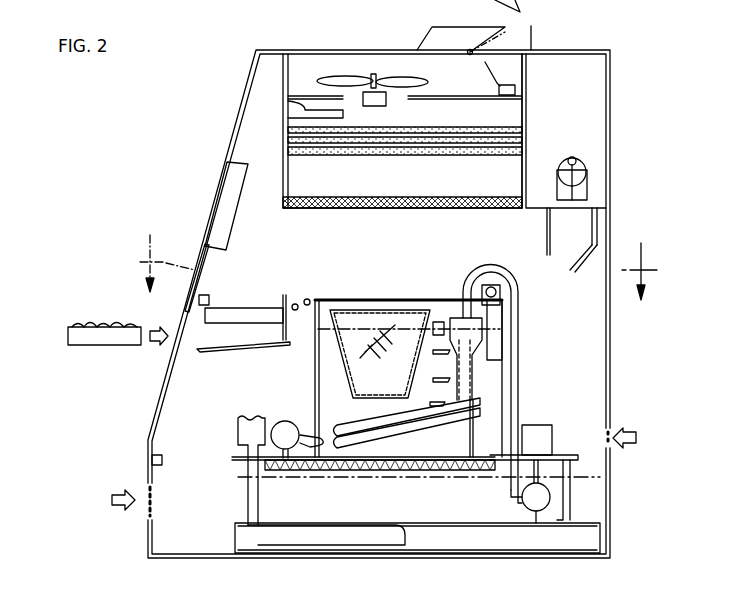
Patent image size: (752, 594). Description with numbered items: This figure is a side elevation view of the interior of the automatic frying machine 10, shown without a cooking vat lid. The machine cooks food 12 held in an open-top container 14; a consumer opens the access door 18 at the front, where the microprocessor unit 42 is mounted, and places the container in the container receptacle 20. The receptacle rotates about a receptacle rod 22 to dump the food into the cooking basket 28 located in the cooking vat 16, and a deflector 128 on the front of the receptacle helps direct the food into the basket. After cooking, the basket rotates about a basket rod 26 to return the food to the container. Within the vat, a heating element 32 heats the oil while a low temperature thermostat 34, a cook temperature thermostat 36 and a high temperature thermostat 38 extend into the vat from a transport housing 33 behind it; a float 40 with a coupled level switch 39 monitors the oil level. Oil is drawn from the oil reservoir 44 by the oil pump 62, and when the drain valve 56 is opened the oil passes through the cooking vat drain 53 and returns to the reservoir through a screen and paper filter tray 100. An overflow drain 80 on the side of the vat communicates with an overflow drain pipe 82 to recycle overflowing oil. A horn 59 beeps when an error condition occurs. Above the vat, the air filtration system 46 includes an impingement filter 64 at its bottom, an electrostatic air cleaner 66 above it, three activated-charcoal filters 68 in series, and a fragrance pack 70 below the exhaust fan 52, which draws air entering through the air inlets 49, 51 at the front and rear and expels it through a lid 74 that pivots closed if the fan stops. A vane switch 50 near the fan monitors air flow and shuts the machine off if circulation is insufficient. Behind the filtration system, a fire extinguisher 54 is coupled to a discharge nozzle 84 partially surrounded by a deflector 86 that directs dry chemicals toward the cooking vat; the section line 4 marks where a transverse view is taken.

The automatic frying machine 10 is at (162, 202).
The food 12 is at (95, 318).
The open-top container 14 is at (105, 340).
The section line 4 is at (390, 267).
The cooking vat 16 is at (379, 304).
The access door 18 is at (180, 352).
The container receptacle 20 is at (245, 350).
The receptacle rod 22 is at (310, 299).
The basket rod 26 is at (296, 304).
The cooking basket 28 is at (338, 360).
The heating element 32 is at (362, 425).
The transport housing 33 is at (503, 336).
The low temperature thermostat 34 is at (445, 355).
The cook temperature thermostat 36 is at (445, 382).
The high temperature thermostat 38 is at (442, 405).
The level switch 39 is at (500, 295).
The float 40 is at (437, 322).
The microprocessor unit 42 is at (228, 215).
The oil reservoir 44 is at (470, 512).
The air filtration system 46 is at (340, 222).
The air inlet 49 is at (150, 505).
The vane switch 50 is at (498, 70).
The air inlet 51 is at (609, 432).
The exhaust fan 52 is at (345, 76).
The cooking vat drain 53 is at (320, 445).
The fire extinguisher 54 is at (588, 182).
The drain valve 56 is at (288, 422).
The horn 59 is at (158, 455).
The oil pump 62 is at (550, 500).
The impingement filter 64 is at (404, 200).
The electrostatic air cleaner 66 is at (463, 178).
The activated-charcoal filters 68 is at (520, 148).
The fragrance pack 70 is at (292, 101).
The lid 74 is at (480, 25).
The overflow drain 80 is at (466, 282).
The overflow drain pipe 82 is at (470, 440).
The discharge nozzle 84 is at (585, 195).
The deflector 86 is at (592, 258).
The screen and paper filter tray 100 is at (398, 460).
The deflector 128 is at (211, 299).